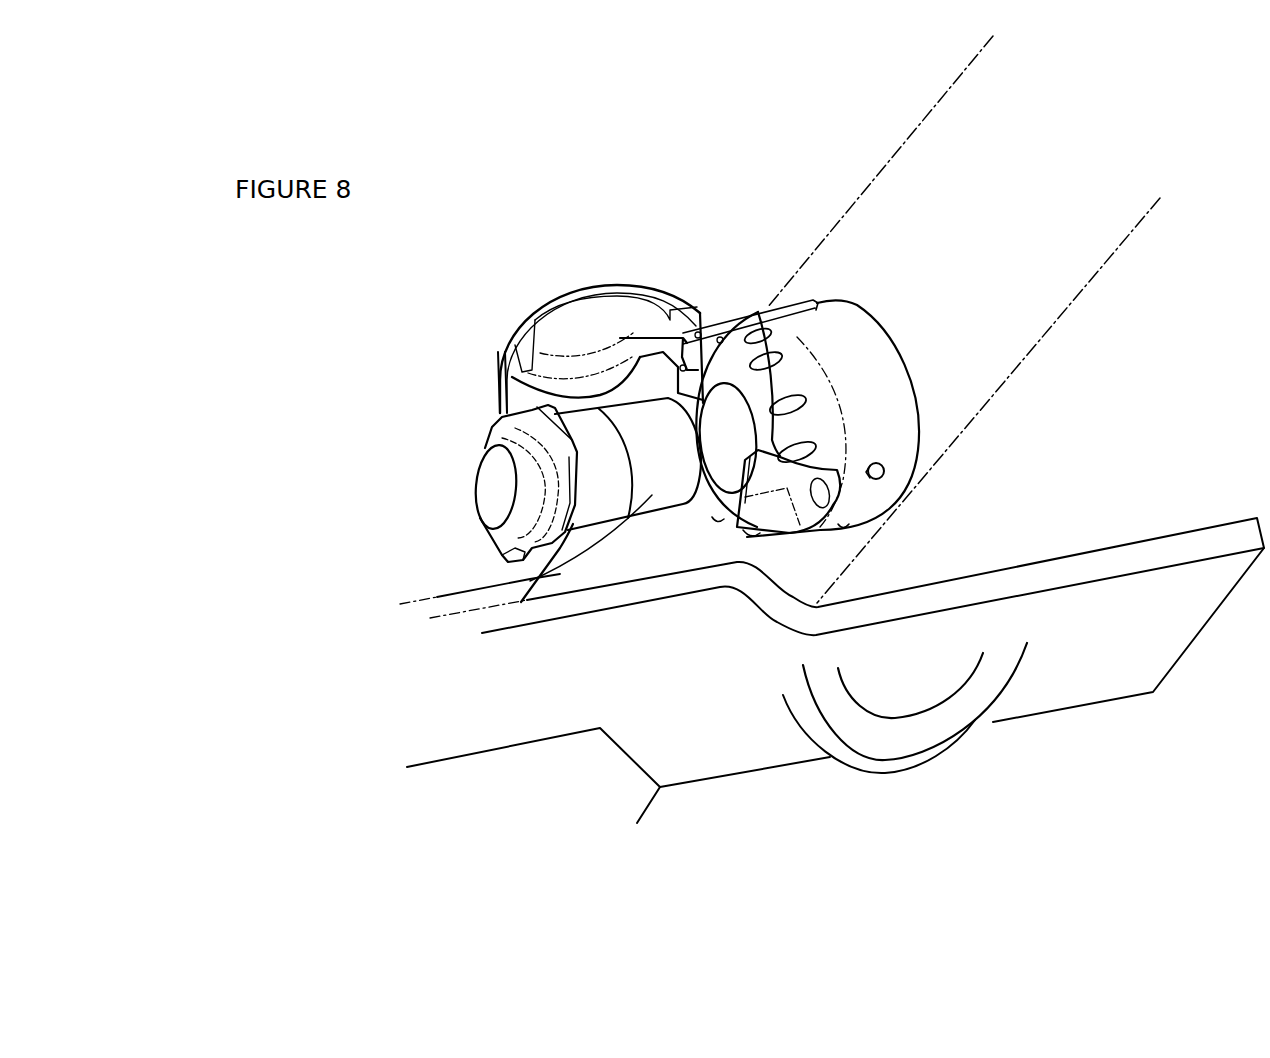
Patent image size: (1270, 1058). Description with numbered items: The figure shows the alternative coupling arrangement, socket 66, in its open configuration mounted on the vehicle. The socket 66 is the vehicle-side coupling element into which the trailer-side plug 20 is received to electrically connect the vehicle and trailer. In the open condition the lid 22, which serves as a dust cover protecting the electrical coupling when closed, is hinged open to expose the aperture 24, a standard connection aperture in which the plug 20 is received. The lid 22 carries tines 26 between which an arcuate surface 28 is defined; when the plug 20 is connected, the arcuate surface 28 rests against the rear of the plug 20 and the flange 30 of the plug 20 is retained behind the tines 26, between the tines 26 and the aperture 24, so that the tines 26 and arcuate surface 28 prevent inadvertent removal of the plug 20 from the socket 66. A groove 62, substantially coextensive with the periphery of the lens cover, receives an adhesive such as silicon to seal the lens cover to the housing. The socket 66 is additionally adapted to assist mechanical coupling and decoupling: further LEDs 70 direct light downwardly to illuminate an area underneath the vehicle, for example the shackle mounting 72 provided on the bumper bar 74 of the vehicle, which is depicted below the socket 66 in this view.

The plug 20 is at (432, 598).
The lid 22 is at (585, 285).
The aperture 24 is at (700, 313).
The tines 26 is at (498, 412).
The arcuate surface 28 is at (508, 350).
The flange 30 is at (500, 547).
The groove 62 is at (762, 332).
The socket 66 is at (487, 350).
The further LEDs 70 is at (885, 472).
The shackle mounting 72 is at (970, 715).
The bumper bar 74 is at (838, 245).